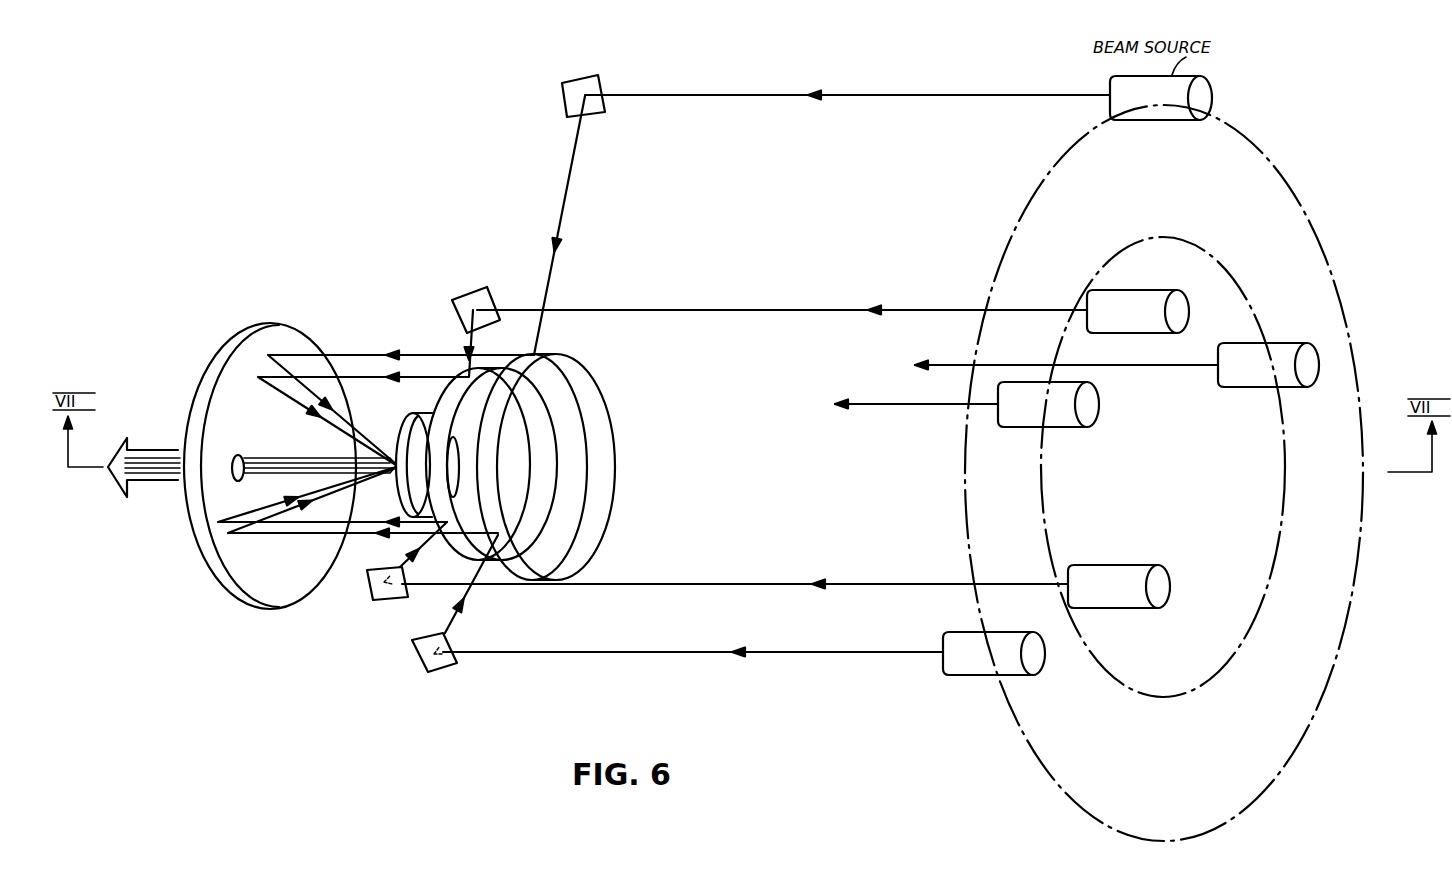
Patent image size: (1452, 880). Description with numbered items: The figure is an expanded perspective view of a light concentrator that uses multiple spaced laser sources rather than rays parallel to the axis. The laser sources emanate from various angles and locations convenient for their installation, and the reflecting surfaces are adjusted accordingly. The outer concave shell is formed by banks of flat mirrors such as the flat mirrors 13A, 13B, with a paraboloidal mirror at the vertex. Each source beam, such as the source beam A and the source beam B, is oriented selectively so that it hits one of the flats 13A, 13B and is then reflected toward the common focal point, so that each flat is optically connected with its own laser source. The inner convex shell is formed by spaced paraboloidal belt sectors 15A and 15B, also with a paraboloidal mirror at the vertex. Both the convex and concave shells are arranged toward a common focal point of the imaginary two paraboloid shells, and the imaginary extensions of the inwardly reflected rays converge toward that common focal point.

The flat mirror 13A is at (584, 75).
The flat mirror 13B is at (465, 292).
The paraboloidal belt sector 15A is at (610, 408).
The paraboloidal belt sector 15B is at (438, 403).
The source beam A is at (850, 95).
The source beam B is at (782, 310).